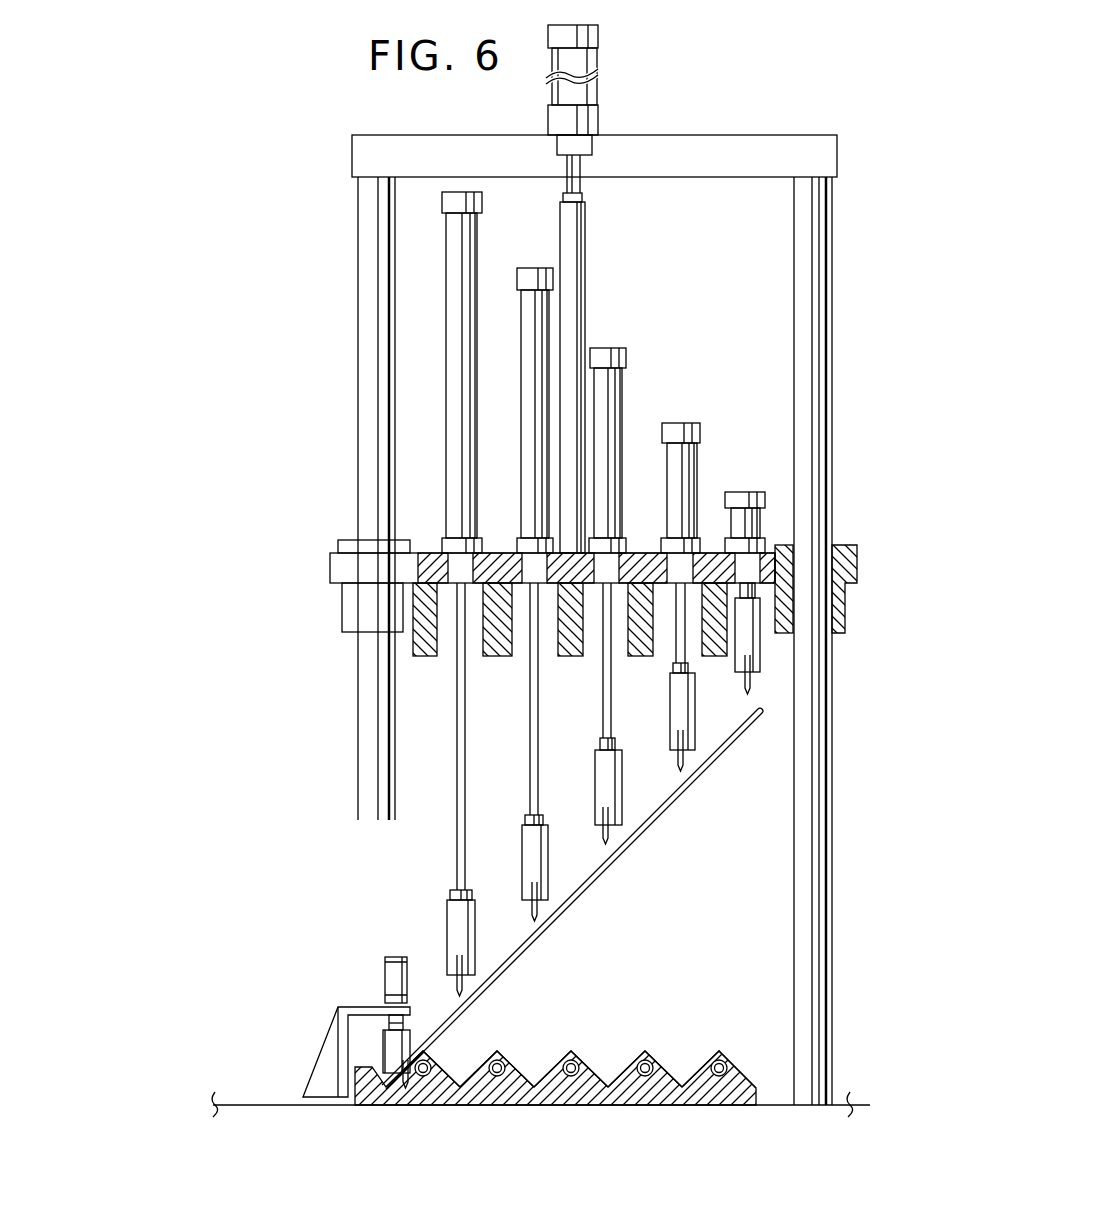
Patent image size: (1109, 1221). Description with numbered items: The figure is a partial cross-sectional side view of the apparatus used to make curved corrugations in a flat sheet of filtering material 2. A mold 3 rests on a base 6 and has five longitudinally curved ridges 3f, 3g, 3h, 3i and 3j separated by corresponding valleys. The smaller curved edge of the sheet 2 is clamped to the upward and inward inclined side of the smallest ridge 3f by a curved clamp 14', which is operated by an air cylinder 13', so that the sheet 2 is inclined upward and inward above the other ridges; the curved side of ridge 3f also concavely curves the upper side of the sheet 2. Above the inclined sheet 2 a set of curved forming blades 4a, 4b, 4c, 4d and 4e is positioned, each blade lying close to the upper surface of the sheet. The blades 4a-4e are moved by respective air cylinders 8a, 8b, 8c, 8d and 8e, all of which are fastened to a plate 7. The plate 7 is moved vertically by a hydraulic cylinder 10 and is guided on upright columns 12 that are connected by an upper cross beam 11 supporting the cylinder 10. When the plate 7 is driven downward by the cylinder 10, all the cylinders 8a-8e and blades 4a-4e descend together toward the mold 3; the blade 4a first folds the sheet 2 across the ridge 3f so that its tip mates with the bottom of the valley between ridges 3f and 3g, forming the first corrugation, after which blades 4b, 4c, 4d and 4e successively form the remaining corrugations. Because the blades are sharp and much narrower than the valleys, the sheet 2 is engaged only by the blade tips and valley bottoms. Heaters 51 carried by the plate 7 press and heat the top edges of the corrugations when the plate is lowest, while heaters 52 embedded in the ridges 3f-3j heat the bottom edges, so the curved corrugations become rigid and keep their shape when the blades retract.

The flat sheet of filtering material 2 is at (625, 844).
The mold 3 is at (756, 1098).
The smallest curved ridge 3f is at (422, 1080).
The curved ridge 3g is at (496, 1080).
The curved ridge 3h is at (572, 1080).
The curved ridge 3i is at (644, 1085).
The curved ridge 3j is at (712, 1085).
The curved forming blade 4a is at (453, 935).
The curved forming blade 4b is at (527, 860).
The curved forming blade 4c is at (605, 766).
The curved forming blade 4d is at (674, 750).
The curved forming blade 4e is at (745, 700).
The base 6 is at (541, 1086).
The plate 7 is at (430, 555).
The air cylinder 8a is at (460, 330).
The air cylinder 8b is at (535, 343).
The air cylinder 8c is at (616, 390).
The air cylinder 8d is at (697, 460).
The air cylinder 8e is at (758, 510).
The hydraulic cylinder 10 is at (580, 60).
The upper cross beam 11 is at (733, 145).
The upright columns 12 is at (360, 223).
The air cylinder 13' is at (367, 980).
The curved clamp 14' is at (377, 1043).
The heaters 51 is at (423, 660).
The heaters 52 is at (710, 1060).